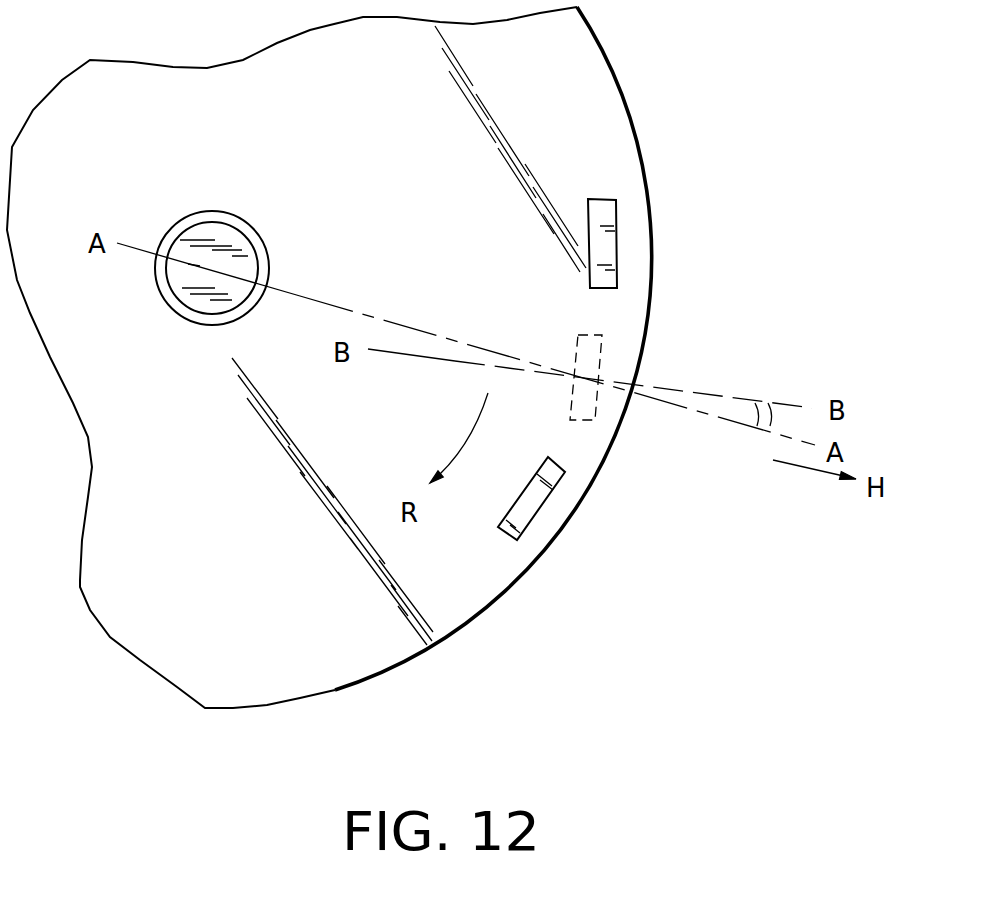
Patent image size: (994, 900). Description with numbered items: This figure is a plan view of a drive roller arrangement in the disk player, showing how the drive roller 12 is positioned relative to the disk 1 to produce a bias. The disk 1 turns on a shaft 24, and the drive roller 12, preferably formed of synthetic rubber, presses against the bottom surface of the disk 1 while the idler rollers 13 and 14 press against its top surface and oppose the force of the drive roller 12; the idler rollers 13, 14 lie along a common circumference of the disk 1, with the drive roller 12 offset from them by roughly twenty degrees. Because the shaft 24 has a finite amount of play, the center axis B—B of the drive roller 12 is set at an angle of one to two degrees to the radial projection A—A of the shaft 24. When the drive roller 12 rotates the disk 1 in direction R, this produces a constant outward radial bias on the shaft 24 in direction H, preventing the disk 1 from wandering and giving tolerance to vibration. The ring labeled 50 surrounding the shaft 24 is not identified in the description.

The disk 1 is at (588, 72).
The shaft 24 is at (210, 233).
The bearing ring 50 is at (248, 227).
The idler roller 14 is at (617, 225).
The drive roller 12 is at (603, 345).
The idler roller 13 is at (530, 527).